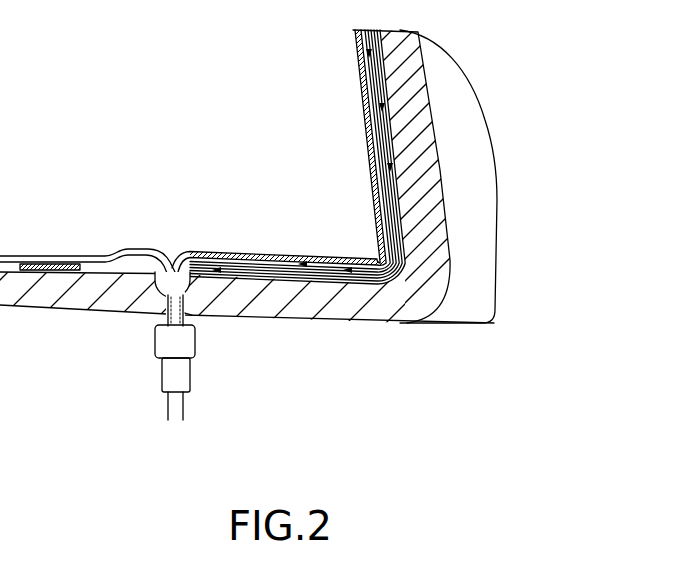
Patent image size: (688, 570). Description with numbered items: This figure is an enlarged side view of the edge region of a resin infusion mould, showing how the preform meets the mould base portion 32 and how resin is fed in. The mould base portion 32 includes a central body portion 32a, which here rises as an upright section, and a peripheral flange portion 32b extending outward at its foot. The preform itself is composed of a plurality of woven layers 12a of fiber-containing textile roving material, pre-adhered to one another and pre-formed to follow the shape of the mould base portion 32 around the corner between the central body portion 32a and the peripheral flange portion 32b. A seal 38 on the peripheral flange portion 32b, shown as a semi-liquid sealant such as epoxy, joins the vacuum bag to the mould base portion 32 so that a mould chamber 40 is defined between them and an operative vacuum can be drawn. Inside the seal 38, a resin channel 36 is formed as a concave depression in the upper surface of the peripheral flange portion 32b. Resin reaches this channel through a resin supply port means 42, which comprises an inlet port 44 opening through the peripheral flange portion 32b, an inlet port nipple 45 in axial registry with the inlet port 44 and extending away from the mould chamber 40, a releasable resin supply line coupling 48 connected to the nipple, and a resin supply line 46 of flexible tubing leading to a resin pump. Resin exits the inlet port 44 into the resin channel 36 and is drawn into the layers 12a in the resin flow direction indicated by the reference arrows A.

The woven layers 12a is at (388, 30).
The mould base portion 32 is at (595, 132).
The central body portion 32a is at (395, 128).
The peripheral flange portion 32b is at (350, 297).
The resin channel 36 is at (174, 273).
The seal 38 is at (40, 263).
The mould chamber 40 is at (152, 259).
The resin supply port means 42 is at (176, 392).
The inlet port 44 is at (166, 303).
The inlet port nipple 45 is at (234, 380).
The resin supply line 46 is at (166, 395).
The releasable resin supply line coupling 48 is at (190, 370).
The resin flow direction A is at (383, 200).